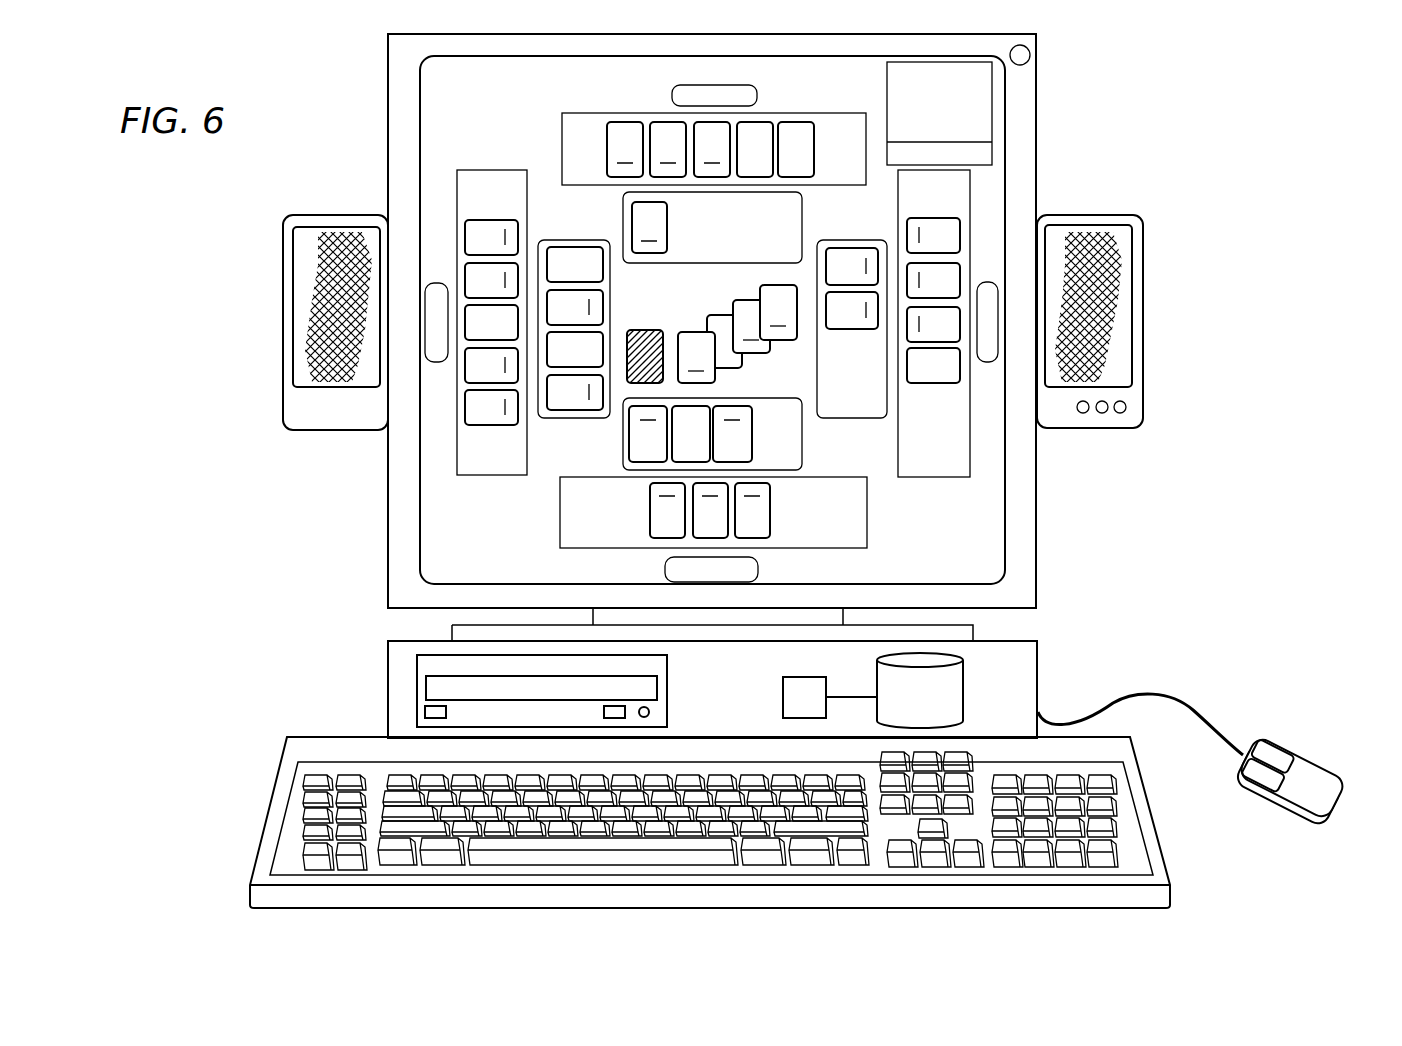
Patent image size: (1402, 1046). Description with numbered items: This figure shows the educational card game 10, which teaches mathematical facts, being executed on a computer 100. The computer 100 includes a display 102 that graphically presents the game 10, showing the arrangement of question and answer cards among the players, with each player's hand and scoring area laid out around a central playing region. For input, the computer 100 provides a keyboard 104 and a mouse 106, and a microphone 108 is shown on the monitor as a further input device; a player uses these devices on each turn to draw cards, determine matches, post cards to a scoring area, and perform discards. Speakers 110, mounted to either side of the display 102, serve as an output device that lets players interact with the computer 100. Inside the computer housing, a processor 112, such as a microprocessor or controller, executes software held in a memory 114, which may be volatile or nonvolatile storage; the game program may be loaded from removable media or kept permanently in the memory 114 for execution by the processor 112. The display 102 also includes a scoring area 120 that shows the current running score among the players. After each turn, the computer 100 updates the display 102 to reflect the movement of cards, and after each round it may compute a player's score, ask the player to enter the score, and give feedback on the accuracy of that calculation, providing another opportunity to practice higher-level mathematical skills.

The game 10 is at (506, 112).
The computer 100 is at (1127, 137).
The display 102 is at (388, 157).
The keyboard 104 is at (266, 819).
The mouse 106 is at (1324, 758).
The microphone 108 is at (1027, 64).
The speakers 110 is at (283, 323).
The processor 112 is at (783, 697).
The memory 114 is at (903, 708).
The scoring area 120 is at (887, 103).